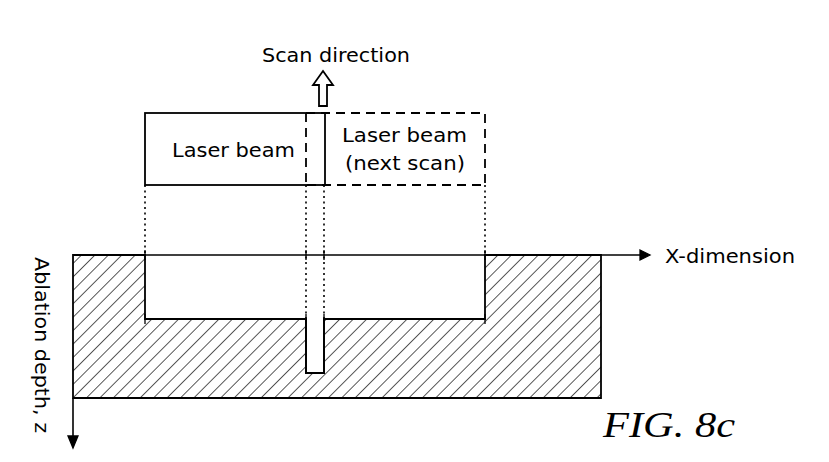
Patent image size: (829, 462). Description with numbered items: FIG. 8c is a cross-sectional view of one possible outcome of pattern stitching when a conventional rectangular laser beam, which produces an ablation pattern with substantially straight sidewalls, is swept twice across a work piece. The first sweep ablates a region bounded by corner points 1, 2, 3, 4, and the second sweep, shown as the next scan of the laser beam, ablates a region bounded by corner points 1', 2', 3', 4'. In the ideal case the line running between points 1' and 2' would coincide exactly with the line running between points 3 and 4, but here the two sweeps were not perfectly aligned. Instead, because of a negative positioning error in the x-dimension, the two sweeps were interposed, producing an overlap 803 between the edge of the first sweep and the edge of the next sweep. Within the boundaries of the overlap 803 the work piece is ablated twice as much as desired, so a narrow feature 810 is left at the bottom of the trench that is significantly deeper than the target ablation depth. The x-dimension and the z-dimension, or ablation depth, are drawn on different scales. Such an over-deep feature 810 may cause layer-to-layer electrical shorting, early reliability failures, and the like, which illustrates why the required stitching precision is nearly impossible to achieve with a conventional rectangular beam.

The overlap 803 is at (360, 290).
The feature 810 is at (314, 358).
The corner point of first rectangle 1 is at (135, 244).
The corner point of second rectangle 1' is at (294, 244).
The corner point of first rectangle 2 is at (135, 334).
The corner point of second rectangle 2' is at (293, 337).
The corner point of first rectangle 3 is at (335, 336).
The corner point of second rectangle 3' is at (497, 330).
The corner point of first rectangle 4 is at (336, 244).
The corner point of second rectangle 4' is at (497, 244).